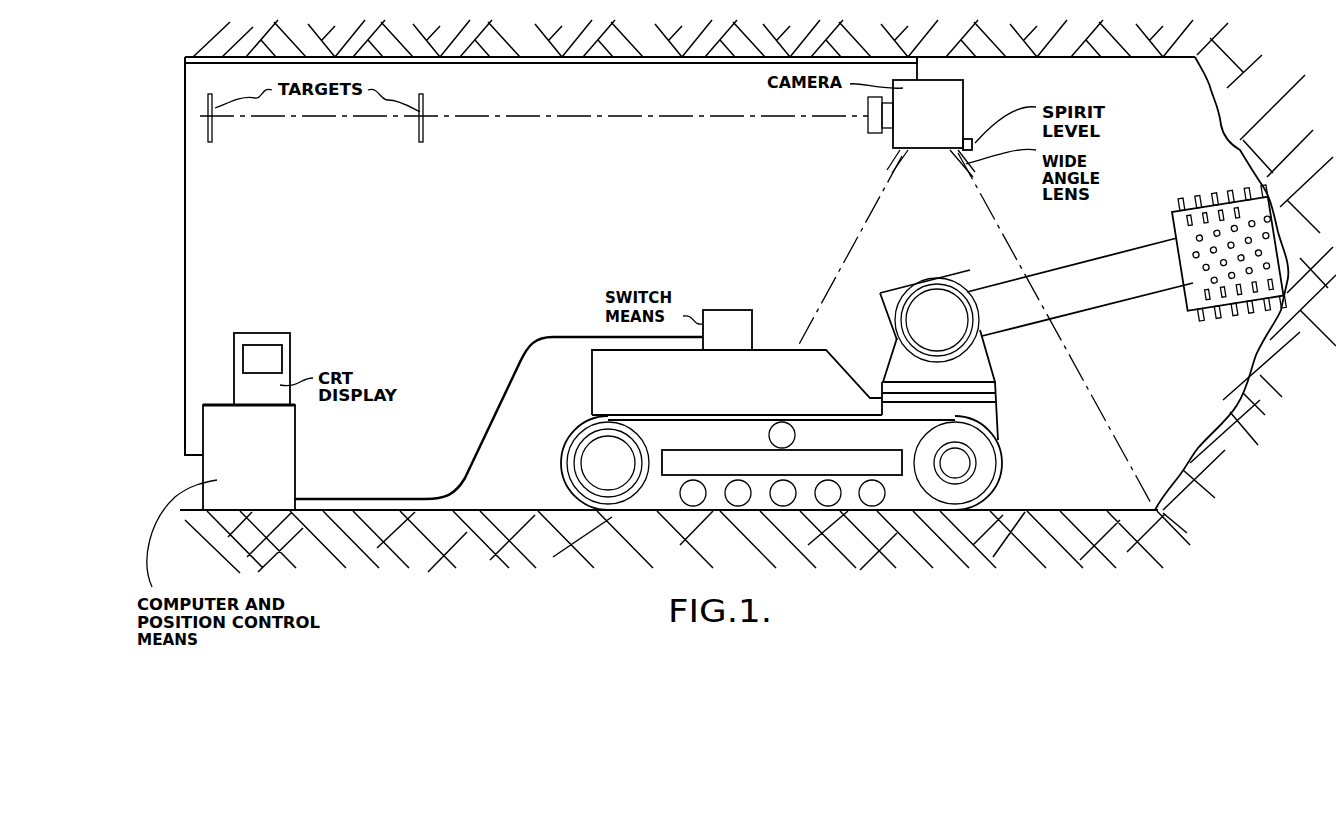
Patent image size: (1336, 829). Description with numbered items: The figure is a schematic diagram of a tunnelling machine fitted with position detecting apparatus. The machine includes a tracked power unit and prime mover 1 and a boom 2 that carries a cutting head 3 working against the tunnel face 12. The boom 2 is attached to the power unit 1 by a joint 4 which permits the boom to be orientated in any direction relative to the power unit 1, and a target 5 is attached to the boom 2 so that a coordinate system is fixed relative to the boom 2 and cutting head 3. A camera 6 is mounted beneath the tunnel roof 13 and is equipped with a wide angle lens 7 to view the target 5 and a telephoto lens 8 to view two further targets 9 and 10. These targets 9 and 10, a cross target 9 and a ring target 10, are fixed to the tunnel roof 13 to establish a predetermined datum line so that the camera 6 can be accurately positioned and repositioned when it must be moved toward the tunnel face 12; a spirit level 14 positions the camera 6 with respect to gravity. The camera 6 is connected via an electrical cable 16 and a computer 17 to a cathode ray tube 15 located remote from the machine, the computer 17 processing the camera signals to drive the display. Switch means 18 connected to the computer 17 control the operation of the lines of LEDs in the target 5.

The tracked power unit and prime mover 1 is at (775, 358).
The boom 2 is at (1120, 287).
The cutting head 3 is at (1226, 216).
The joint 4 is at (983, 362).
The target 5 is at (881, 302).
The camera 6 is at (948, 106).
The wide angle lens 7 is at (970, 168).
The telephoto lens 8 is at (873, 118).
The cross target 9 is at (424, 124).
The ring target 10 is at (213, 124).
The tunnel face 12 is at (1226, 140).
The tunnel roof 13 is at (1048, 56).
The spirit level 14 is at (974, 145).
The cathode ray tube 15 is at (286, 353).
The electrical cable 16 is at (187, 252).
The computer 17 is at (275, 440).
The switch means 18 is at (722, 322).